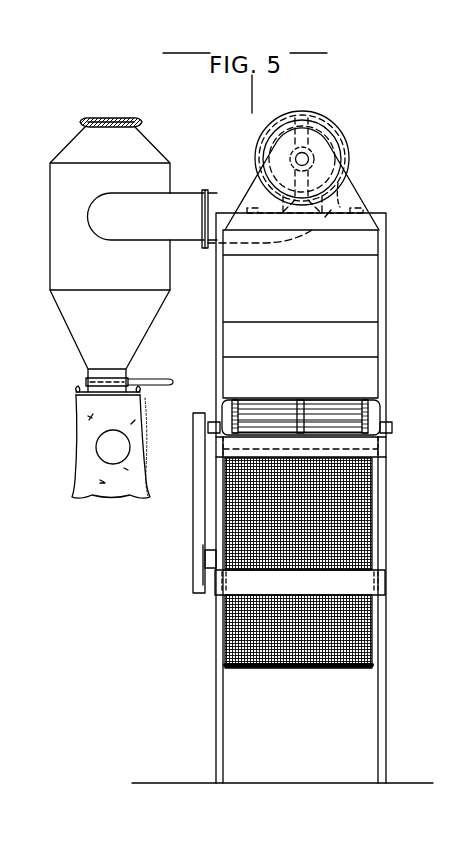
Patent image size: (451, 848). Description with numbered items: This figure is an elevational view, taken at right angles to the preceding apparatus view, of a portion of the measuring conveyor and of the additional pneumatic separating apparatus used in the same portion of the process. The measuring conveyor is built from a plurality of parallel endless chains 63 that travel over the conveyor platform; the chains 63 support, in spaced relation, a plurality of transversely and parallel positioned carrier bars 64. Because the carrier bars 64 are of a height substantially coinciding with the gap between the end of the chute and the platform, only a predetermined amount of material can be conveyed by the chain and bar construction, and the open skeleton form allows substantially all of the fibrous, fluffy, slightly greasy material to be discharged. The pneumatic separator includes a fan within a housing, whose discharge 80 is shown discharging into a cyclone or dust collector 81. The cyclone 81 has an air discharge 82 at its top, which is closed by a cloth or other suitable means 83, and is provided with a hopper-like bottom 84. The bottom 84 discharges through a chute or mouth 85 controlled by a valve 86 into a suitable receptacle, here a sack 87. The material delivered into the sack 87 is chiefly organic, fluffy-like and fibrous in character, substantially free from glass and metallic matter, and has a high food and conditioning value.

The chains 63 is at (385, 406).
The carrier bars 64 is at (273, 413).
The discharge 80 is at (191, 240).
The cyclone or dust collector 81 is at (60, 262).
The air discharge 82 is at (127, 120).
The cloth 83 is at (102, 117).
The hopper-like bottom 84 is at (78, 318).
The chute or mouth 85 is at (74, 391).
The valve 86 is at (165, 379).
The sack 87 is at (80, 472).